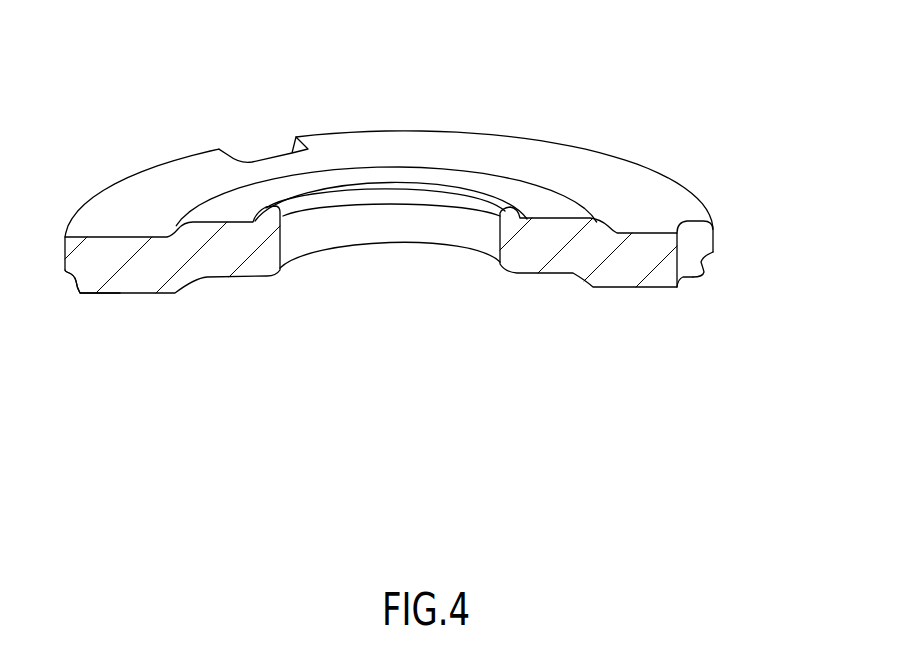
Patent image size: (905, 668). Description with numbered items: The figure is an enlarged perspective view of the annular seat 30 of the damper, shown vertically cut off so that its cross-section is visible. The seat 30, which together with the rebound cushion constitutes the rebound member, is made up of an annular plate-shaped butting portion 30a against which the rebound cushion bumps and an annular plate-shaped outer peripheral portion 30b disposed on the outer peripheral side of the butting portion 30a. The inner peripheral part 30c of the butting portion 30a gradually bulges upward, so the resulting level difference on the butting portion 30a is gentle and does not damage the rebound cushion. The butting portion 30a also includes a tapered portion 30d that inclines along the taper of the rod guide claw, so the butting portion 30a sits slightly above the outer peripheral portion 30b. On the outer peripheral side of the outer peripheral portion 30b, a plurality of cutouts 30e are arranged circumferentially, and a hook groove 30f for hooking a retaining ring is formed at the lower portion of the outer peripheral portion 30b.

The seat 30 is at (624, 116).
The butting portion 30a is at (245, 295).
The outer peripheral portion 30b is at (119, 310).
The inner peripheral part 30c is at (287, 213).
The tapered portion 30d is at (585, 272).
The cutouts 30e is at (260, 157).
The hook groove 30f is at (705, 267).